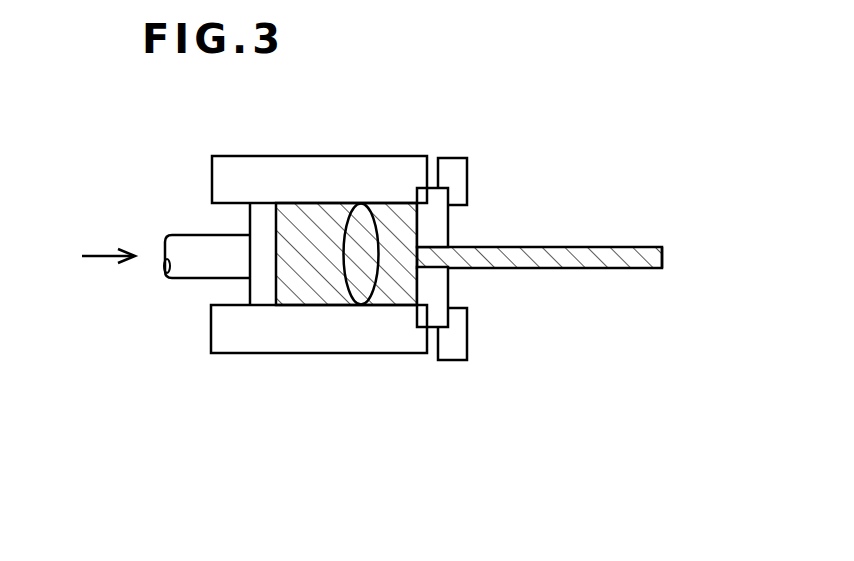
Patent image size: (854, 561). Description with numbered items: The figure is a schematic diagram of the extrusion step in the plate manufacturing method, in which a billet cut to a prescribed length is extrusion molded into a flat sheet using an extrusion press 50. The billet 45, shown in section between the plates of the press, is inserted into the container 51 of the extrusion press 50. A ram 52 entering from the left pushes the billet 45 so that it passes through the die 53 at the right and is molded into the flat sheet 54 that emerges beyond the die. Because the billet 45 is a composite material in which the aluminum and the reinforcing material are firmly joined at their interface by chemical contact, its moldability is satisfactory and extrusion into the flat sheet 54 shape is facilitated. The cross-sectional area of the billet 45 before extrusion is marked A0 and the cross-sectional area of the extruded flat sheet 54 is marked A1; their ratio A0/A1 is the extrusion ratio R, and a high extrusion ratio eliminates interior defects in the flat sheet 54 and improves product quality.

The billet 45 is at (313, 222).
The extrusion press 50 is at (273, 147).
The container 51 is at (363, 157).
The ram 52 is at (188, 248).
The die 53 is at (447, 227).
The flat sheet 54 is at (601, 247).
The cross-sectional area of the billet before extrusion A0 is at (347, 297).
The cross-sectional area of the extruded flat sheet A1 is at (664, 258).